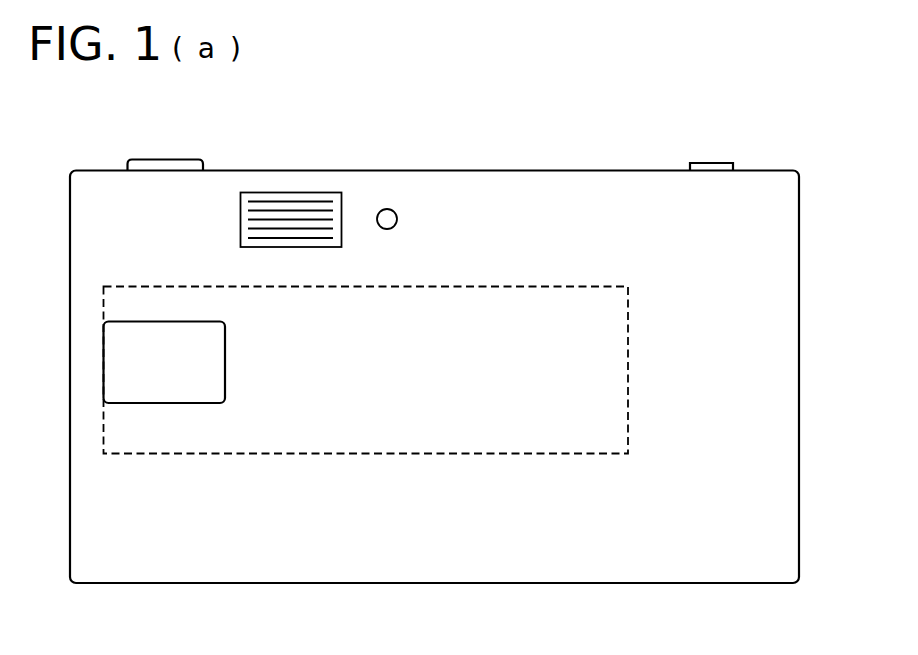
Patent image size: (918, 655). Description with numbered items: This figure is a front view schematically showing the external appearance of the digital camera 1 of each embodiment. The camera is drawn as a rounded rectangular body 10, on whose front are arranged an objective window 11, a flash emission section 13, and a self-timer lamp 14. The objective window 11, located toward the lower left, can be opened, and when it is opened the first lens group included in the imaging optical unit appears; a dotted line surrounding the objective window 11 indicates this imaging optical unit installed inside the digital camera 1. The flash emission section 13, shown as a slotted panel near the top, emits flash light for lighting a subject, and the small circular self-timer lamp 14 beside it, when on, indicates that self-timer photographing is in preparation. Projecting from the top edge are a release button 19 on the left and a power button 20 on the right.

The digital camera 1 is at (773, 598).
The housing 10 is at (350, 584).
The objective window 11 is at (161, 404).
The flash emission section 13 is at (296, 196).
The self-timer lamp 14 is at (387, 208).
The release button 19 is at (167, 158).
The power button 20 is at (708, 162).